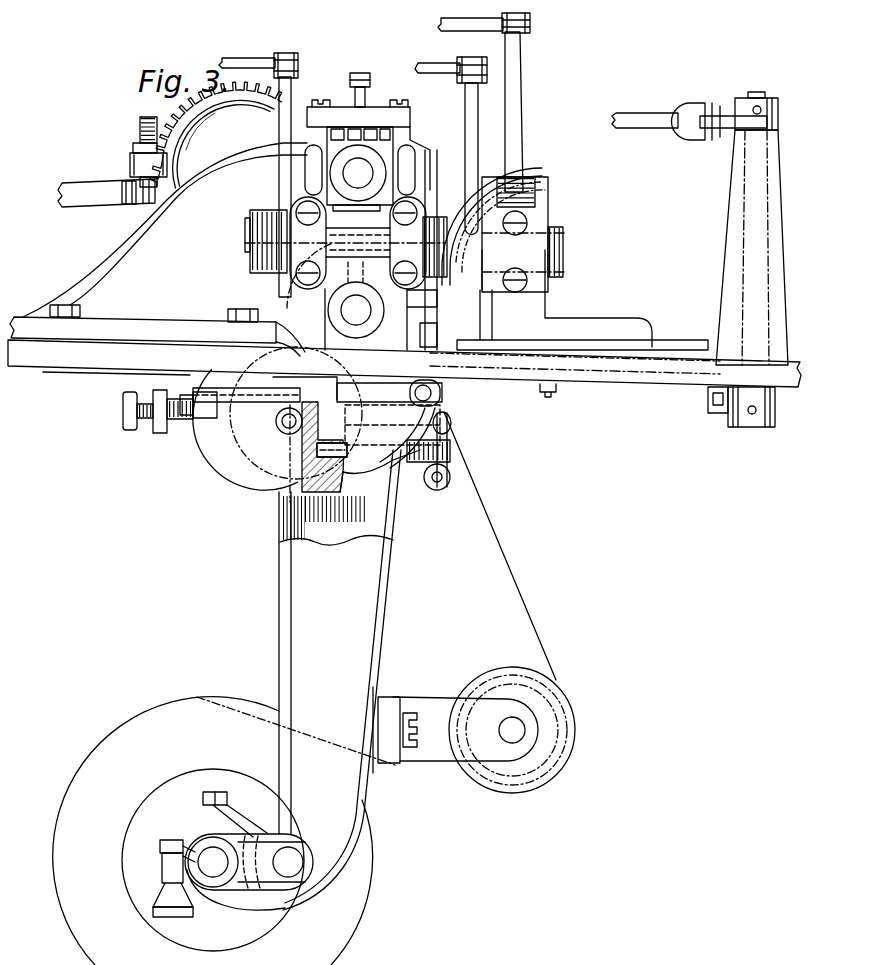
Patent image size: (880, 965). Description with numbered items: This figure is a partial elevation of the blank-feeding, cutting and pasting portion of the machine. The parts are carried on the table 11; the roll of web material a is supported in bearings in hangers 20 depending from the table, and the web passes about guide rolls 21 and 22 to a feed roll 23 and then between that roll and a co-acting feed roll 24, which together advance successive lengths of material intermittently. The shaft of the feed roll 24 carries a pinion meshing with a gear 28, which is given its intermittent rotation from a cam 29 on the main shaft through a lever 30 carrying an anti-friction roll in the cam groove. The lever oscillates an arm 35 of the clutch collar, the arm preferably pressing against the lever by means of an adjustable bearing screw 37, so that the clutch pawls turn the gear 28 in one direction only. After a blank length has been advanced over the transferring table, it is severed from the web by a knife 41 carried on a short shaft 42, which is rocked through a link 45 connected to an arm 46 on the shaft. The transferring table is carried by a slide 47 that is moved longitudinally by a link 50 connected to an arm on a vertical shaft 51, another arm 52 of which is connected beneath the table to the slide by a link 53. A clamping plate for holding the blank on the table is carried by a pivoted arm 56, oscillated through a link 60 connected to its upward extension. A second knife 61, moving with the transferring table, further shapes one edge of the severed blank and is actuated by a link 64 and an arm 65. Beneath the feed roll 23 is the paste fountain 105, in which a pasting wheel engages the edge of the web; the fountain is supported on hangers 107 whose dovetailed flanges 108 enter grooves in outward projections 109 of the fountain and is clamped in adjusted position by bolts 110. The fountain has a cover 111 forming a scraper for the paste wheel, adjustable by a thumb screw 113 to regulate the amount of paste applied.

The table 11 is at (52, 368).
The hangers 20 is at (299, 680).
The guide roll 21 is at (576, 720).
The guide roll 22 is at (446, 393).
The feed roll 23 is at (289, 300).
The co-acting feed roll 24 is at (343, 107).
The gear 28 is at (216, 135).
The cam 29 is at (320, 386).
The lever 30 is at (522, 452).
The arm 35 is at (130, 163).
The adjustable bearing screw 37 is at (140, 126).
The knife 41 is at (497, 162).
The short shaft 42 is at (250, 244).
The link 45 is at (257, 63).
The arm 46 is at (279, 182).
The slide 47 is at (619, 323).
The link 50 is at (653, 109).
The vertical shaft 51 is at (768, 98).
The arm 52 is at (717, 400).
The link 53 is at (667, 386).
The pivoted arm 56 is at (516, 148).
The link 60 is at (478, 28).
The second knife 61 is at (450, 196).
The link 64 is at (445, 71).
The arm 65 is at (473, 140).
The fountain 105 is at (218, 462).
The hangers 107 is at (387, 478).
The dovetailed flanges 108 is at (300, 446).
The outward projections 109 is at (303, 458).
The bolts 110 is at (450, 449).
The cover 111 is at (183, 394).
The thumb screw 113 is at (125, 404).
The web of material a is at (505, 565).